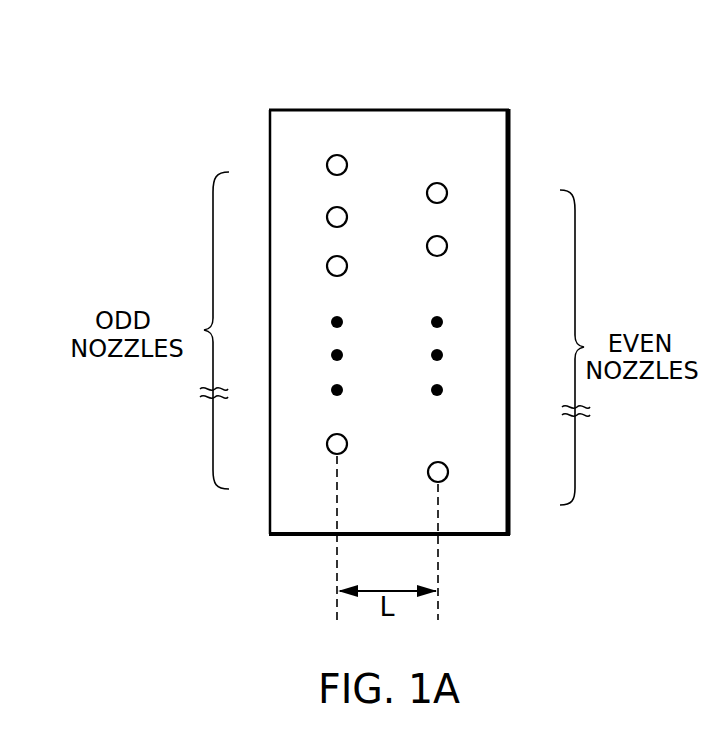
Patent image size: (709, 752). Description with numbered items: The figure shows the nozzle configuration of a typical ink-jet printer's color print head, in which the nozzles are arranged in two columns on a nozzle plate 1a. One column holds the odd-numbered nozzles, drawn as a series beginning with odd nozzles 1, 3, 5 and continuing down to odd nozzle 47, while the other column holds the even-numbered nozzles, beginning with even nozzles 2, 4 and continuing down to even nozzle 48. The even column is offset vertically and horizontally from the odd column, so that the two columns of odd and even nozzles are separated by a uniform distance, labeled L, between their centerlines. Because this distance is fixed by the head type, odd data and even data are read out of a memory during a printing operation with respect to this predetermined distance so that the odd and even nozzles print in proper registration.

The nozzle plate 1a is at (397, 110).
The odd nozzle 1 is at (327, 167).
The odd nozzle 3 is at (327, 219).
The odd nozzle 5 is at (327, 268).
The odd nozzle 47 is at (327, 445).
The even nozzle 2 is at (447, 194).
The even nozzle 4 is at (447, 247).
The even nozzle 48 is at (448, 473).